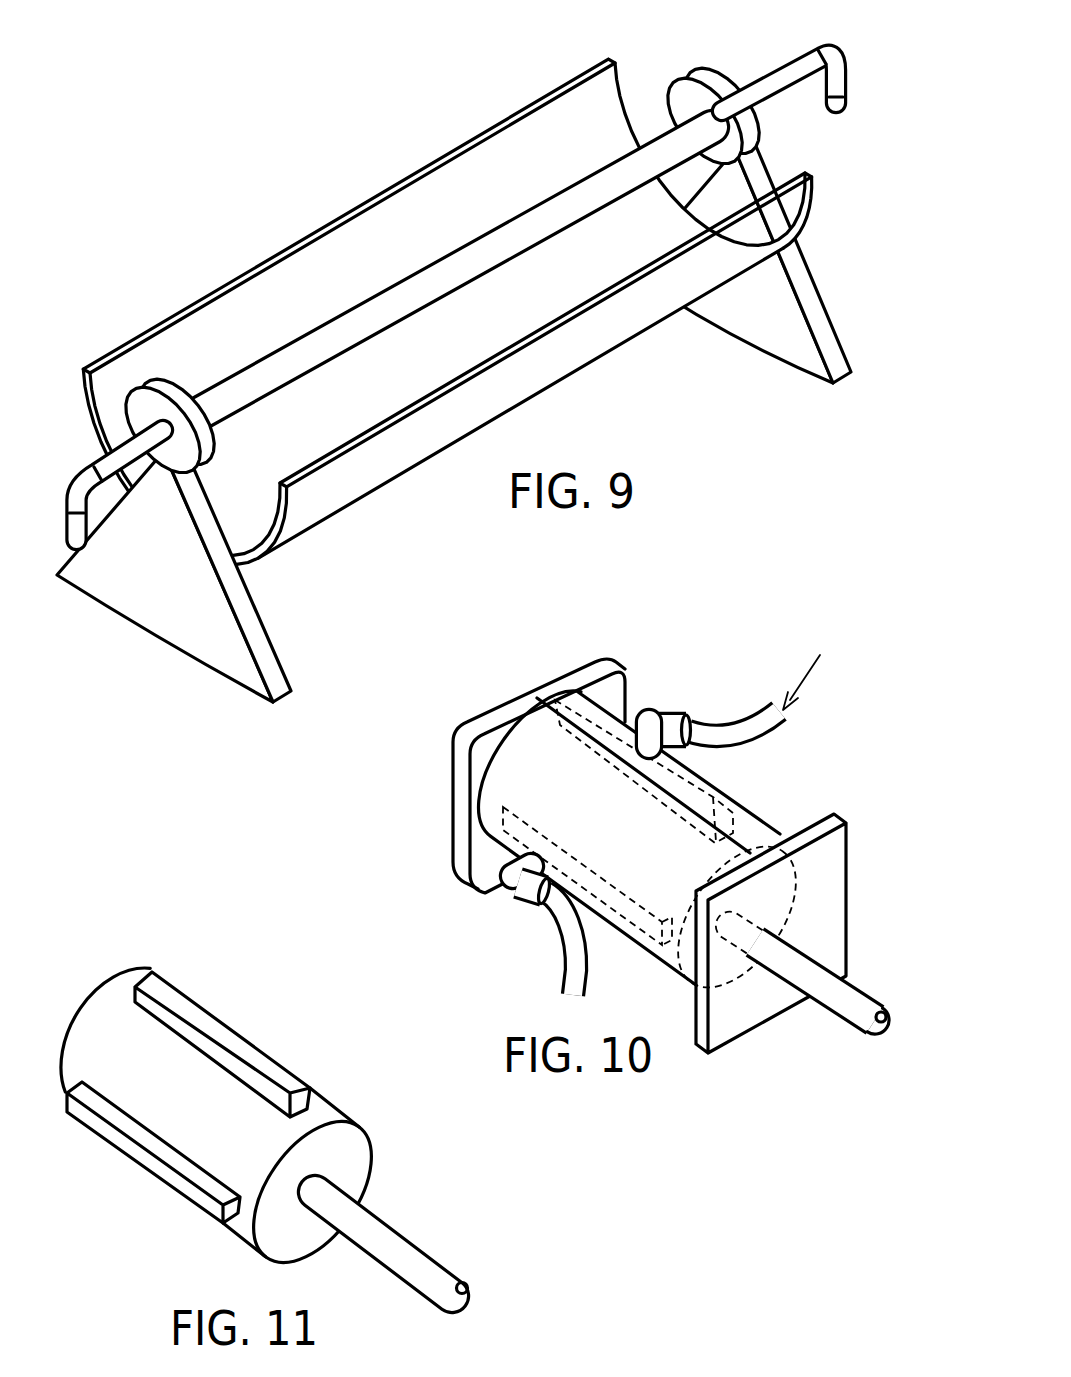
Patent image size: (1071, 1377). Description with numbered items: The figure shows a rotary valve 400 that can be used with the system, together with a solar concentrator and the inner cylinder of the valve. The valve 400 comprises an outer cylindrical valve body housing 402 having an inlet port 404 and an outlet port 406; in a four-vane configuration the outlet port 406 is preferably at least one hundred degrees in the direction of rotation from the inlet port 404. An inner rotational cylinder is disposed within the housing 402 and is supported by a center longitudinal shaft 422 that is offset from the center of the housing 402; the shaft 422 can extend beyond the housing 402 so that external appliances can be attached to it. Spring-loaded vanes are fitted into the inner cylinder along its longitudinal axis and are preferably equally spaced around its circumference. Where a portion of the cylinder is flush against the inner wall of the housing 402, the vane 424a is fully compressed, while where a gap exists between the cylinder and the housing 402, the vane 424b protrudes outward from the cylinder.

In FIG. 10, the rotary valve 400 is at (764, 607).
In FIG. 10, the outer cylindrical valve body housing 402 is at (628, 715).
In FIG. 10, the inlet port 404 is at (664, 717).
In FIG. 10, the outlet port 406 is at (511, 896).
In FIG. 10, the center longitudinal shaft 422 is at (850, 1017).
In FIG. 11, the center longitudinal shaft 422 is at (388, 1233).
In FIG. 10, the vane 424a is at (505, 815).
In FIG. 11, the vane 424a is at (150, 1163).
In FIG. 10, the vane 424b is at (709, 833).
In FIG. 11, the vane 424b is at (277, 1070).